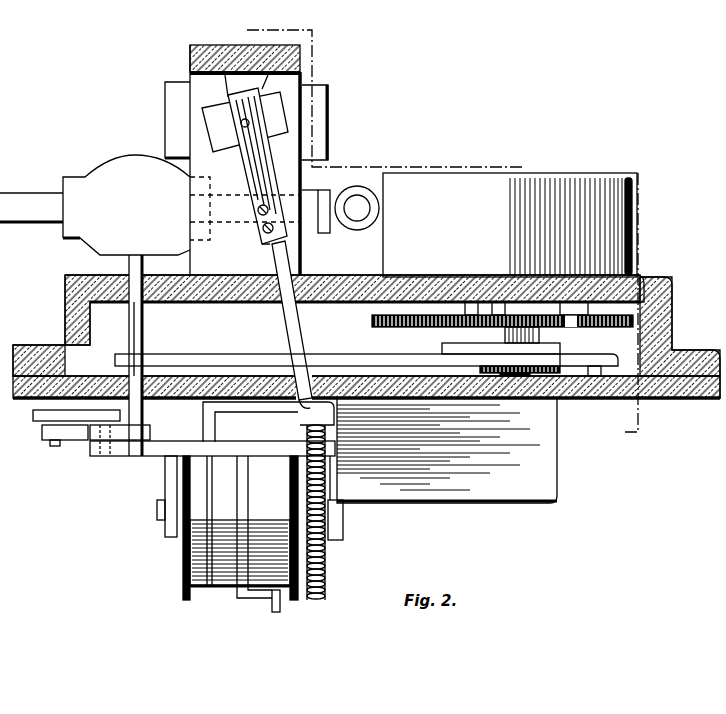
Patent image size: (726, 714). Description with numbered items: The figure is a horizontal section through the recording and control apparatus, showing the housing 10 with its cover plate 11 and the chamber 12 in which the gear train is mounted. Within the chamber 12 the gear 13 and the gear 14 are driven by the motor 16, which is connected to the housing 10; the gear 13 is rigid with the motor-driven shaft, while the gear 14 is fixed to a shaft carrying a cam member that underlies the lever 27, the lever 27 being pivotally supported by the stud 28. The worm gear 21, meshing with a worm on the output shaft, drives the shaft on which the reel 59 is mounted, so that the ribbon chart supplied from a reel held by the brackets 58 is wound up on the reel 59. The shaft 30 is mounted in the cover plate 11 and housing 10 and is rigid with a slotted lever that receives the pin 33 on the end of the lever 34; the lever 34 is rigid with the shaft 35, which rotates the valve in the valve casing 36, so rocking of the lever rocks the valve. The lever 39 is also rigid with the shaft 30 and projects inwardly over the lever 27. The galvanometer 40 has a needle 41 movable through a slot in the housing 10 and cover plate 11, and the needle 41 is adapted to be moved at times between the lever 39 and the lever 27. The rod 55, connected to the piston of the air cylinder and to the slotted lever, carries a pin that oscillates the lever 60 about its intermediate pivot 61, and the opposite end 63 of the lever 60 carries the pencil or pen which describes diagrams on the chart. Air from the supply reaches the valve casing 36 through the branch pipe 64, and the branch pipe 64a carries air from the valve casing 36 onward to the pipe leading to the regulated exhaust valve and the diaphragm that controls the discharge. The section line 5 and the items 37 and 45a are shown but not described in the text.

The section line 5- 5 is at (243, 27).
The housing 10 is at (650, 290).
The cover plate 11 is at (668, 398).
The chamber 12 is at (337, 284).
The gear 13 is at (640, 320).
The gear 14 is at (470, 315).
The motor 16 is at (456, 190).
The worm gear 21 is at (324, 566).
The lever 27 is at (614, 358).
The stud 28 is at (598, 378).
The shaft 30 is at (128, 323).
The pin 33 is at (56, 437).
The lever 34 is at (98, 438).
The shaft 35 is at (128, 266).
The valve casing 36 is at (108, 172).
The bracket foot 37 is at (70, 442).
The lever 39 is at (185, 355).
The galvanometer 40 is at (276, 108).
The needle 41 is at (284, 320).
The solenoid 45a is at (415, 500).
The rod 55 is at (155, 456).
The brackets 58 is at (168, 510).
The reel 59 is at (205, 520).
The lever 60 is at (240, 590).
The pivot 61 is at (242, 408).
The lever end 63 is at (277, 602).
The branch pipe 64 is at (346, 203).
The branch pipe 64a is at (16, 203).